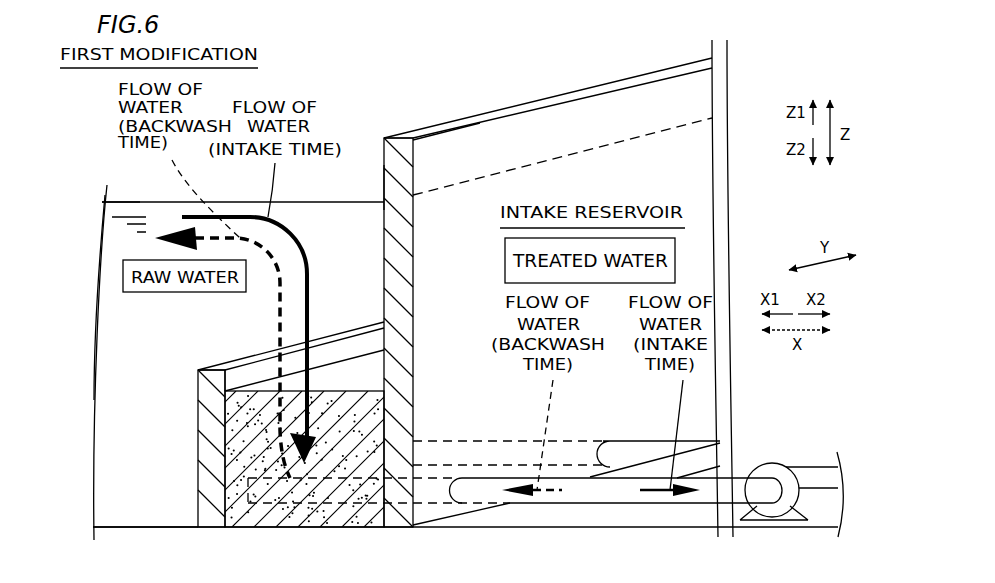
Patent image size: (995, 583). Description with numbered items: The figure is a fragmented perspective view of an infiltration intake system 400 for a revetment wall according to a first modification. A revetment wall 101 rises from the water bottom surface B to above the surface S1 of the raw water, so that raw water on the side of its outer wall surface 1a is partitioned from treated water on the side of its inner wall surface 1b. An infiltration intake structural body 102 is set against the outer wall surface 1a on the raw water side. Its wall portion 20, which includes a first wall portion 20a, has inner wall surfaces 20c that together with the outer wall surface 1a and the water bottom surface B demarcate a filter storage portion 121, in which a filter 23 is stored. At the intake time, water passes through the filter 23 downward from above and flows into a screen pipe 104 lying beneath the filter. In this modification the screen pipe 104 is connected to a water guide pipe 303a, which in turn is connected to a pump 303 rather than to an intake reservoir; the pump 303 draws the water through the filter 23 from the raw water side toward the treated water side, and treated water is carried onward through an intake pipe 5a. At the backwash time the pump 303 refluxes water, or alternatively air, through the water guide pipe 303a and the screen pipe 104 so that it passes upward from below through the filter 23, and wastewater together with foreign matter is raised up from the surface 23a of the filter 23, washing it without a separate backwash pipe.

The infiltration intake system 400 is at (340, 100).
The revetment wall 101 is at (398, 145).
The outer wall surface 1a is at (384, 163).
The inner wall surface 1b is at (453, 137).
The surface of the raw water S1 is at (100, 200).
The infiltration intake structural body 102 is at (168, 380).
The wall portion 20 is at (171, 448).
The first wall portion 20a is at (212, 421).
The inner wall surface 20c is at (233, 377).
The filter 23 is at (232, 458).
The surface of the filter 23a is at (355, 375).
The filter storage portion 121 is at (368, 347).
The screen pipe 104 is at (497, 441).
The water guide pipe 303a is at (647, 455).
The pump 303 is at (775, 470).
The intake pipe 5a is at (828, 478).
The water bottom surface B is at (140, 525).